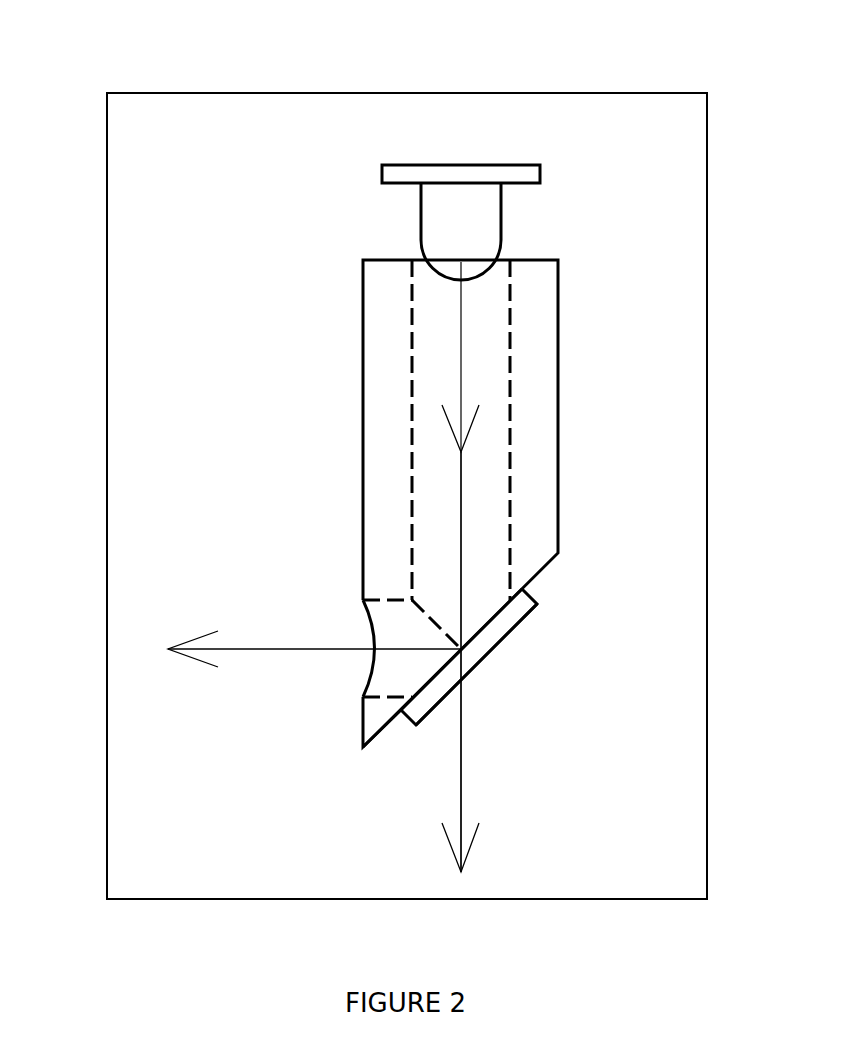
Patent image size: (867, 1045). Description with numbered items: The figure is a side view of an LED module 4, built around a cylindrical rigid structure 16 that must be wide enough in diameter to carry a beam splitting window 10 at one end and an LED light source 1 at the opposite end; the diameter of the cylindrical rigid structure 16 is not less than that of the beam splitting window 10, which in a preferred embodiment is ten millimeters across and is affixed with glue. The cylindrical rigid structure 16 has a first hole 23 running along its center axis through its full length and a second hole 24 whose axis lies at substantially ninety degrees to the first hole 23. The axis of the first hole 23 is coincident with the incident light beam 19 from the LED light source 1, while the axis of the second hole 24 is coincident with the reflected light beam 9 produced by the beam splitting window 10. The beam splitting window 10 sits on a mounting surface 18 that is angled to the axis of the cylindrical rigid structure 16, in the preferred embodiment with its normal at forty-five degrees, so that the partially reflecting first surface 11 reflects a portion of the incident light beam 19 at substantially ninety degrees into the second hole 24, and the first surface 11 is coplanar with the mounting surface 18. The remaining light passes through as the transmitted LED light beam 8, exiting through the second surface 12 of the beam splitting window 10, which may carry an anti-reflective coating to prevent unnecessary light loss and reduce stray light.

The LED light source 1 is at (463, 165).
The LED module 4 is at (363, 263).
The cylindrical rigid structure 16 is at (385, 391).
The first hole 23 is at (440, 484).
The incident light beam 19 is at (460, 570).
The second hole 24 is at (397, 618).
The reflected light beam 9 is at (343, 649).
The transmitted LED light beam 8 is at (461, 793).
The beam splitting window 10 is at (518, 608).
The first surface 11 is at (493, 621).
The second surface 12 is at (483, 663).
The mounting surface 18 is at (383, 730).